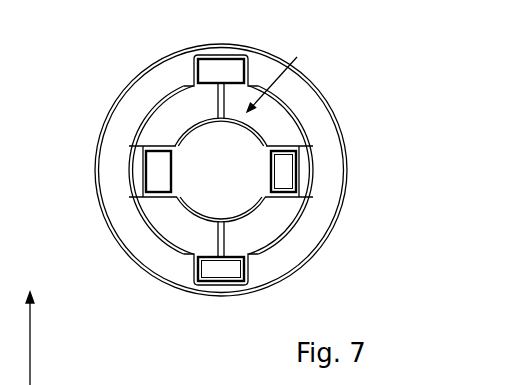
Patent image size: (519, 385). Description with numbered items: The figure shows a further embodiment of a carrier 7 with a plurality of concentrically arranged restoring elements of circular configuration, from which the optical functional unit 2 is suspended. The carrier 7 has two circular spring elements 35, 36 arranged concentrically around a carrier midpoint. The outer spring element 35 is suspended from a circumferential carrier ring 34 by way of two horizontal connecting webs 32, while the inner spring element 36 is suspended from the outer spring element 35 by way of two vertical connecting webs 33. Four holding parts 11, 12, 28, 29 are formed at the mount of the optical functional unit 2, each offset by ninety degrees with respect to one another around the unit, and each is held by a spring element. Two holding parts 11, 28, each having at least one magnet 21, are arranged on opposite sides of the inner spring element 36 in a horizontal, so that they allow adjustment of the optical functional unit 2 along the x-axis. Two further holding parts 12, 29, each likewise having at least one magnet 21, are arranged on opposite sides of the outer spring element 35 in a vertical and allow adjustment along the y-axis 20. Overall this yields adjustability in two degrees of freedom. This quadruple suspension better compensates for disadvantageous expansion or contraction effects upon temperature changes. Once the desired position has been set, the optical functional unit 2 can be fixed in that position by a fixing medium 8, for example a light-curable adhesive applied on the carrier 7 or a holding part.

The optical functional unit 2 is at (226, 143).
The carrier 7 is at (174, 110).
The fixing medium 8 is at (276, 73).
The holding part 11 is at (300, 175).
The holding part 12 is at (176, 86).
The y-axis 20 is at (17, 338).
The magnet 21 is at (217, 68).
The holding part 28 is at (133, 174).
The holding part 29 is at (218, 268).
The horizontal connecting web 32 is at (300, 169).
The vertical connecting web 33 is at (184, 240).
The carrier ring 34 is at (280, 286).
The outer spring element 35 is at (163, 69).
The inner spring element 36 is at (196, 128).